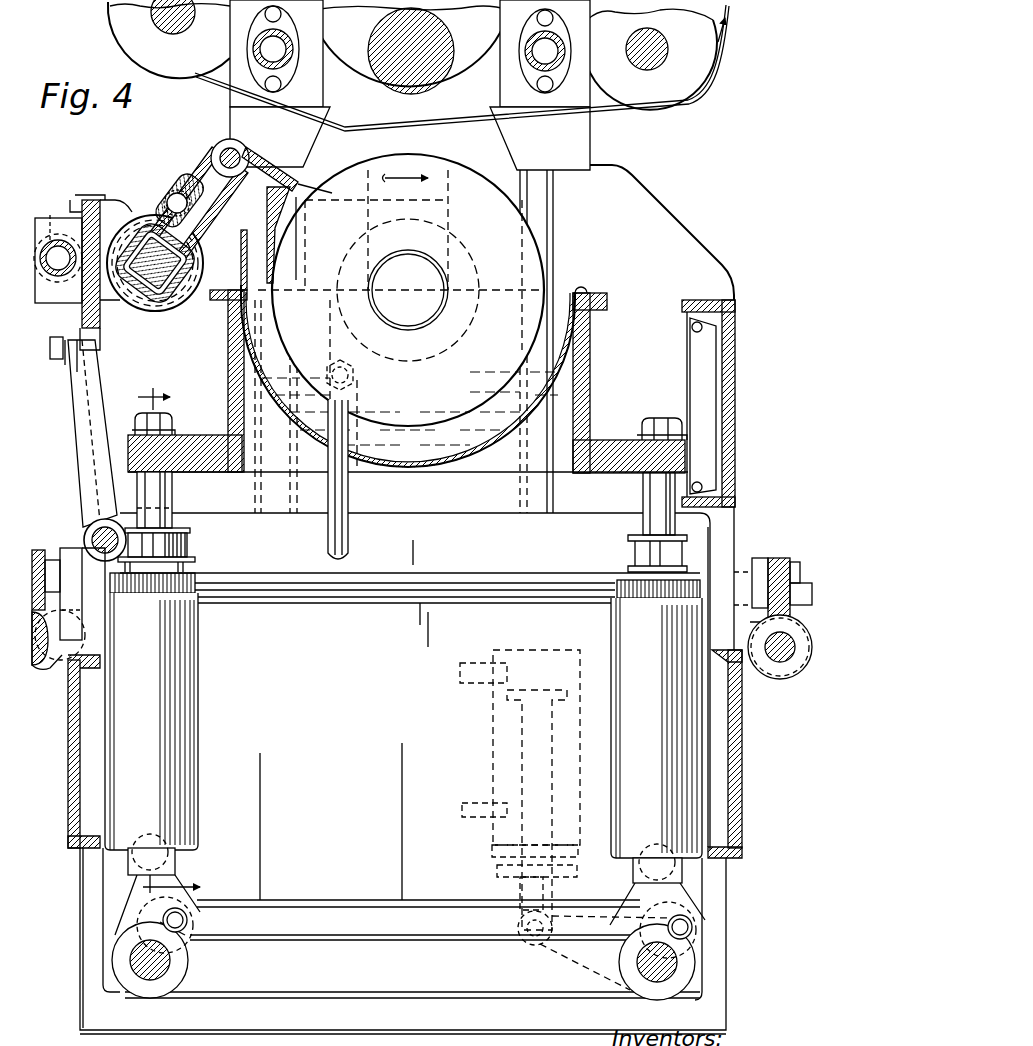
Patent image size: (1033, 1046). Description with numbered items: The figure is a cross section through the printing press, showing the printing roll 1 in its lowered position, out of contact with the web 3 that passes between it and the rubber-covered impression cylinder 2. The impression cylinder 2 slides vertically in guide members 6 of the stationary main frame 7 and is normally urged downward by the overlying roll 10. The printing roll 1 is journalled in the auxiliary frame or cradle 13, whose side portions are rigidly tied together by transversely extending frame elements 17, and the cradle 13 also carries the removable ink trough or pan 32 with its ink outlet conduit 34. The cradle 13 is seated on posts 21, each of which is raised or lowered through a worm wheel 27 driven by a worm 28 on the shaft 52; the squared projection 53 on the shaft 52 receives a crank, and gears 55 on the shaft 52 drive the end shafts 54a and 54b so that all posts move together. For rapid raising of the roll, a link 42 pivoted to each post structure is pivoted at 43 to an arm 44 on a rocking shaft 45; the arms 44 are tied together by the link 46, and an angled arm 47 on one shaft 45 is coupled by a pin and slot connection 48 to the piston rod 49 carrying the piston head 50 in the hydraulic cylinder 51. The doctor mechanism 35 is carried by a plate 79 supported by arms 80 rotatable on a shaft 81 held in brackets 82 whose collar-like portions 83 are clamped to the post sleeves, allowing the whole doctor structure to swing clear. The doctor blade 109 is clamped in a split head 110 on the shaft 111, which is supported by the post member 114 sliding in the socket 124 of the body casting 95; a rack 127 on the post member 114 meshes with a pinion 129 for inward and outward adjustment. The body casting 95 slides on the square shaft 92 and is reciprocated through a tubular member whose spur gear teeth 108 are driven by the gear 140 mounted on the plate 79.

The printing roll 1 is at (437, 160).
The impression cylinder 2 is at (486, 82).
The web 3 is at (612, 112).
The guide members 6 is at (176, 636).
The main frame 7 is at (68, 734).
The overlying roll 10 is at (190, 227).
The auxiliary frame member or cradle 13 is at (377, 392).
The transversely extending frame elements 17 is at (232, 382).
The posts 21 is at (172, 518).
The worm wheel 27 is at (195, 575).
The worm 28 is at (403, 725).
The ink trough or pan 32 is at (470, 450).
The ink outlet conduit 34 is at (328, 528).
The doctor mechanism 35 is at (155, 248).
The link 42 is at (176, 872).
The pivot 43 is at (190, 920).
The arm 44 is at (145, 928).
The shaft 45 is at (172, 962).
The link 46 is at (350, 900).
The arm 47 is at (555, 960).
The pin and slot connection 48 is at (518, 922).
The piston rod 49 is at (520, 890).
The piston head 50 is at (510, 708).
The hydraulic cylinder 51 is at (496, 740).
The shaft 52 is at (384, 575).
The squared projection 53 is at (800, 580).
The shaft 54a is at (780, 662).
The shaft 54b is at (45, 668).
The gears 55 is at (780, 556).
The plate 79 is at (90, 200).
The arms 80 is at (84, 420).
The shaft 81 is at (81, 526).
The brackets 82 is at (88, 520).
The collar-like portions 83 is at (190, 540).
The shaft 92 is at (165, 275).
The body casting 95 is at (216, 217).
The spur gear teeth 108 is at (172, 305).
The doctor blade 109 is at (300, 180).
The split head 110 is at (275, 162).
The shaft 111 is at (236, 145).
The post member 114 is at (163, 189).
The socket 124 is at (201, 211).
The rack 127 is at (190, 255).
The pinion 129 is at (178, 183).
The gear 140 is at (52, 218).